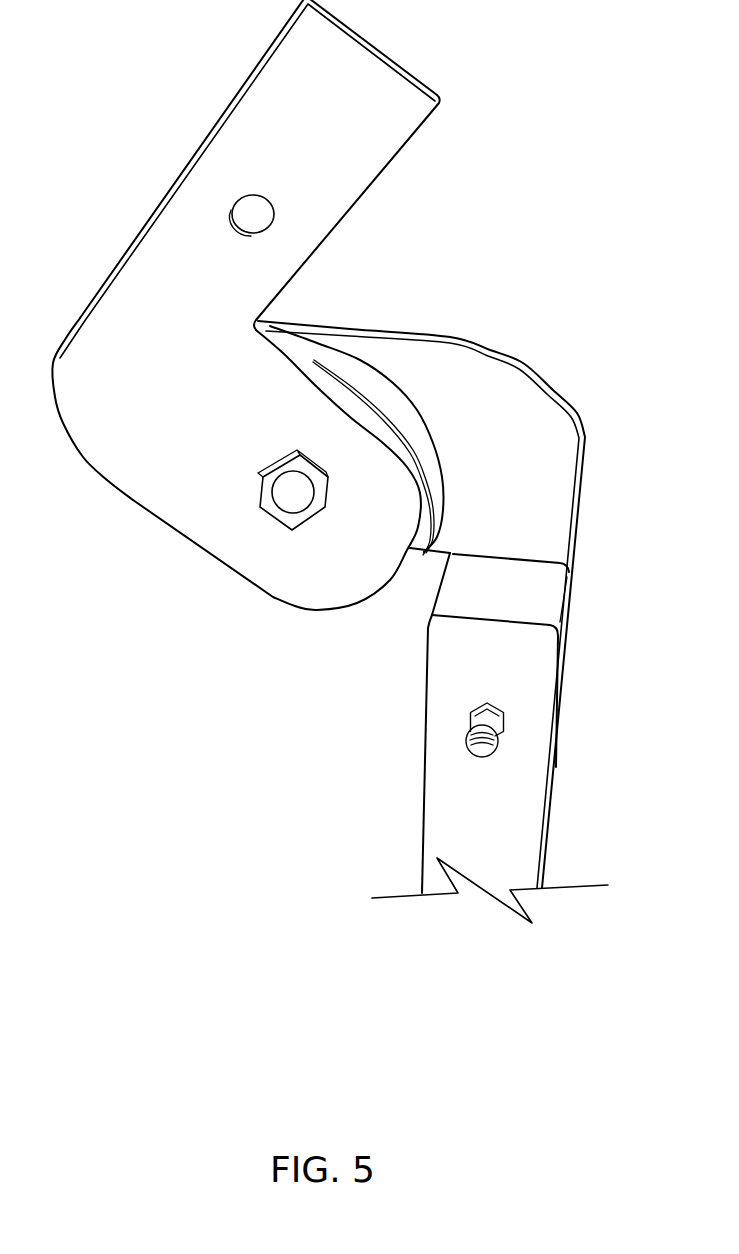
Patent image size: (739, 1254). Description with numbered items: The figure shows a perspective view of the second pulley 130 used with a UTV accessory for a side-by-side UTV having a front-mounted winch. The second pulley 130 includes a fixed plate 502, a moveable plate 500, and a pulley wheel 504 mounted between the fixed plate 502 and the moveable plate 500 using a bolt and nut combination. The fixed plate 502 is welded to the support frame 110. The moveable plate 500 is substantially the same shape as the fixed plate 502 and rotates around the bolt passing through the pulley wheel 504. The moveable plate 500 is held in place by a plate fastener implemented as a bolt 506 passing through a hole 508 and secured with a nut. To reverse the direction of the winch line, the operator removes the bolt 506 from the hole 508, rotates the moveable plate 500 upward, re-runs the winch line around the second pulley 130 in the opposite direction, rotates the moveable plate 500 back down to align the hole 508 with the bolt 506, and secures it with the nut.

The second pulley 130 is at (146, 535).
The moveable plate 500 is at (283, 80).
The fixed plate 502 is at (523, 392).
The pulley wheel 504 is at (342, 352).
The bolt 506 is at (487, 747).
The hole 508 is at (253, 210).
The support frame 110 is at (433, 788).